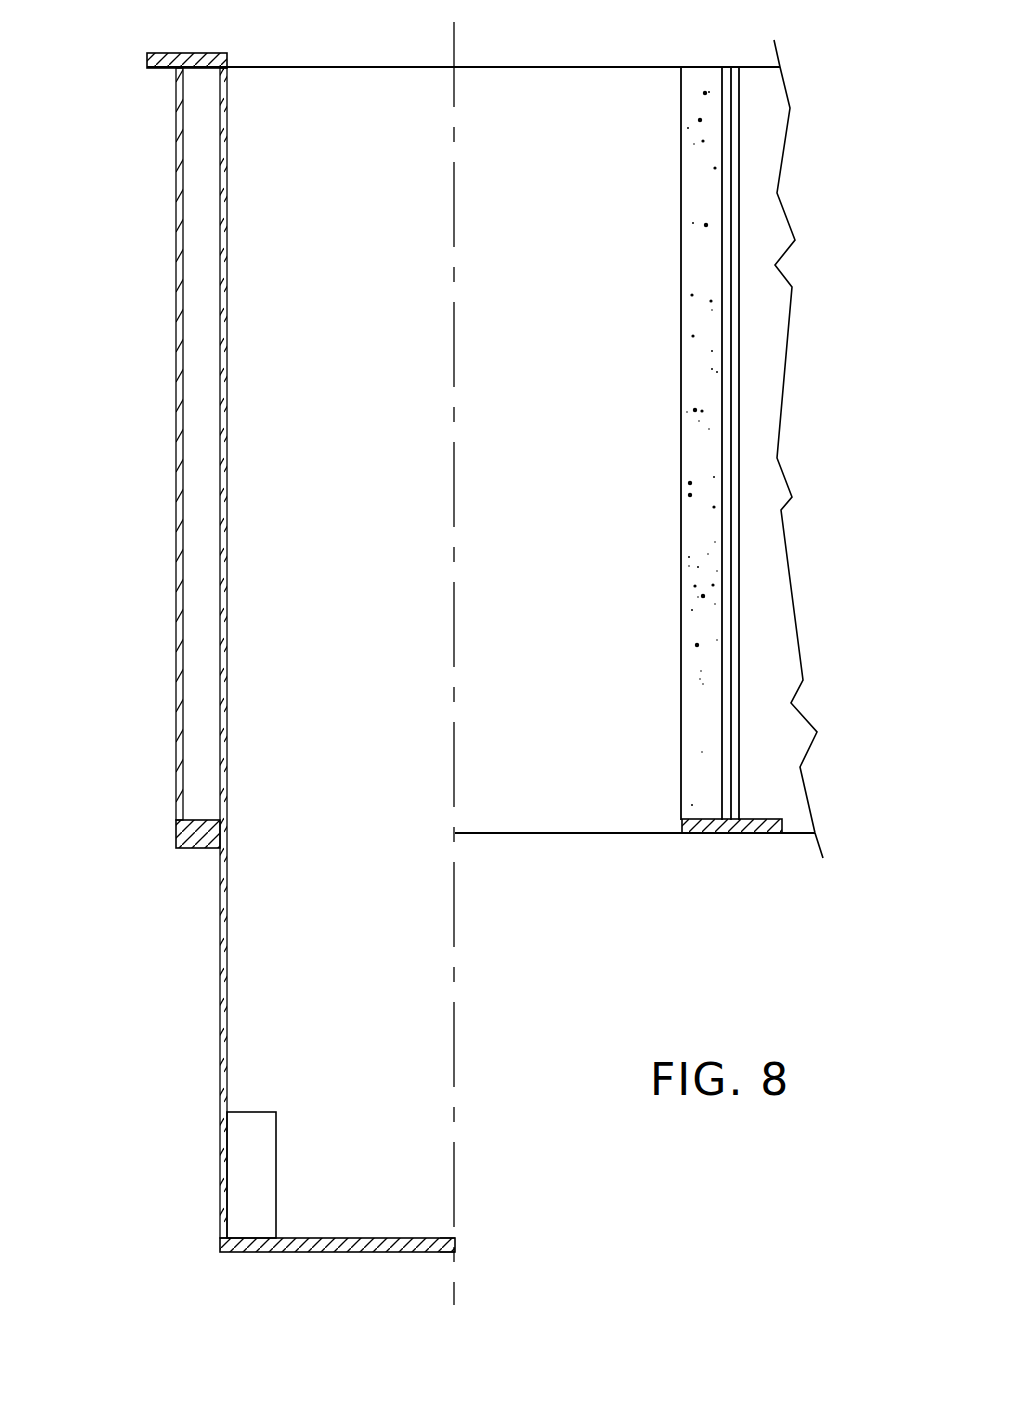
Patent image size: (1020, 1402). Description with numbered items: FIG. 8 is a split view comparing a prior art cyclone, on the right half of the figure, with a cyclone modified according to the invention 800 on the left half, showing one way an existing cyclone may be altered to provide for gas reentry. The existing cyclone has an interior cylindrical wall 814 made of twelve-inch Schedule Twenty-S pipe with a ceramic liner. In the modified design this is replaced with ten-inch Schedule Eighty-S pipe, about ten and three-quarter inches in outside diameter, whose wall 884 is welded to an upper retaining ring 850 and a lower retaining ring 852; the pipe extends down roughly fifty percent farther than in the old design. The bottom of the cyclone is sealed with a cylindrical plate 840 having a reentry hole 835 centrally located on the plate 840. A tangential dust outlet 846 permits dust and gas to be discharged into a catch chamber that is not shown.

The heater assembly 800 is at (136, 377).
The retaining ring 850 is at (190, 53).
The retaining ring 852 is at (200, 849).
The outer wall 884 is at (218, 1052).
The tangential dust outlet 846 is at (247, 1188).
The cylindrical plate 840 is at (303, 1253).
The reentry hole 835 is at (446, 1253).
The interior cylindrical wall 814 is at (682, 651).